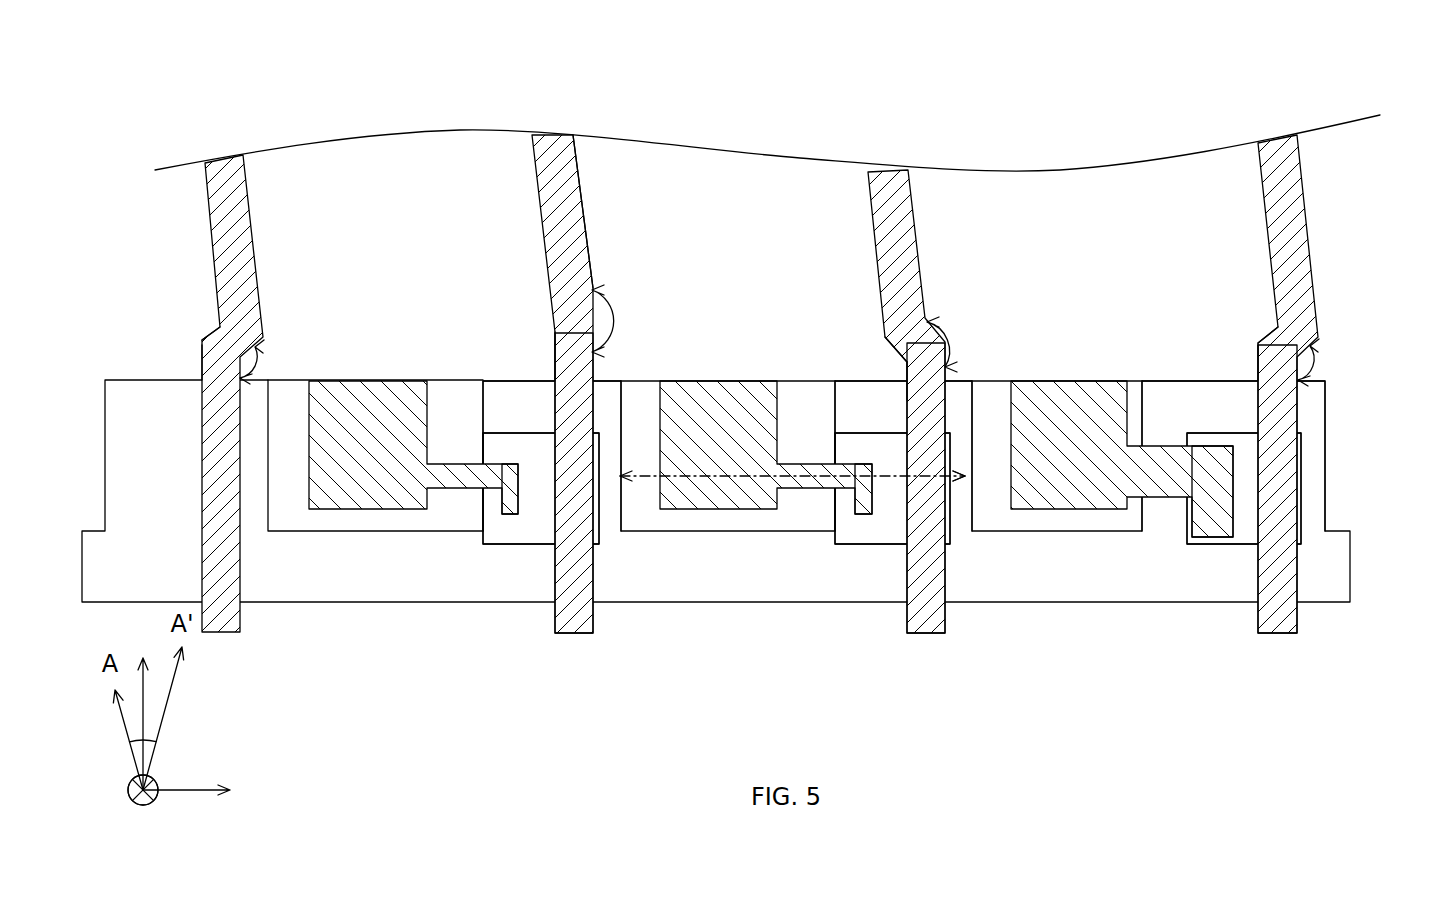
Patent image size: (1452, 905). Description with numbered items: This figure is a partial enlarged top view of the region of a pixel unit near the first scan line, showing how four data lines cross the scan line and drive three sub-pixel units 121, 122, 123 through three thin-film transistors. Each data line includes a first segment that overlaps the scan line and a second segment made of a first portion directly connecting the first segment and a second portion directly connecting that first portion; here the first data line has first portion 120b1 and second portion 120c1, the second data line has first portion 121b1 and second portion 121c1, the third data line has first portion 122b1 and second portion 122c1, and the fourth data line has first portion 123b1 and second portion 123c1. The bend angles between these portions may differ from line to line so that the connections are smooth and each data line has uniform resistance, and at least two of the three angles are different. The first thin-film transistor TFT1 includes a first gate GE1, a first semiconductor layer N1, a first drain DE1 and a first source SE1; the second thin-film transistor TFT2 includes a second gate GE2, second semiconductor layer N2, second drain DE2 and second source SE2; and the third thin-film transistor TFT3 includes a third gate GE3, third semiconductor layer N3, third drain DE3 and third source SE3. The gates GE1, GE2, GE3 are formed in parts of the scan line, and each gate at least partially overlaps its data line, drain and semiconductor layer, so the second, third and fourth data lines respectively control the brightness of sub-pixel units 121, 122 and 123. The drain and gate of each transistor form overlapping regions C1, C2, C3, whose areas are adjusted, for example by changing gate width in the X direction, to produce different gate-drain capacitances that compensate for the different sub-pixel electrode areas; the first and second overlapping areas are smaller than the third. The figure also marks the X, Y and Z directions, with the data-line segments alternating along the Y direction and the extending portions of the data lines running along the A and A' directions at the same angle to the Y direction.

The first sub-pixel unit 121 is at (386, 97).
The second sub-pixel unit 122 is at (731, 97).
The third sub-pixel unit 123 is at (1083, 97).
The second portion of second segment of first data line 120c1 is at (220, 330).
The first portion of second segment of first data line 120b1 is at (220, 368).
The second portion of second segment of second data line 121c1 is at (577, 340).
The first portion of second segment of second data line 121b1 is at (573, 370).
The second portion of second segment of third data line 122c1 is at (916, 342).
The first portion of second segment of third data line 122b1 is at (915, 373).
The second portion of second segment of fourth data line 123c1 is at (1278, 330).
The first portion of second segment of fourth data line 123b1 is at (1277, 367).
The first drain DE1 is at (372, 397).
The second drain DE2 is at (722, 397).
The third drain DE3 is at (1073, 397).
The first gate GE1 is at (505, 403).
The second gate GE2 is at (857, 403).
The third gate GE3 is at (1190, 408).
The first overlapping region C1 is at (497, 486).
The second overlapping region C2 is at (843, 491).
The third overlapping region C3 is at (1198, 483).
The first semiconductor layer N1 is at (510, 546).
The second semiconductor layer N2 is at (862, 546).
The third semiconductor layer N3 is at (1212, 546).
The first source SE1 is at (578, 507).
The second source SE2 is at (930, 507).
The third source SE3 is at (1280, 487).
The first thin-film transistor TFT1 is at (545, 564).
The second thin-film transistor TFT2 is at (895, 564).
The third thin-film transistor TFT3 is at (1243, 564).
The A direction A is at (792, 462).
The A' direction A' is at (959, 462).
The X direction X is at (202, 792).
The Y direction Y is at (143, 708).
The Z direction Z is at (131, 791).